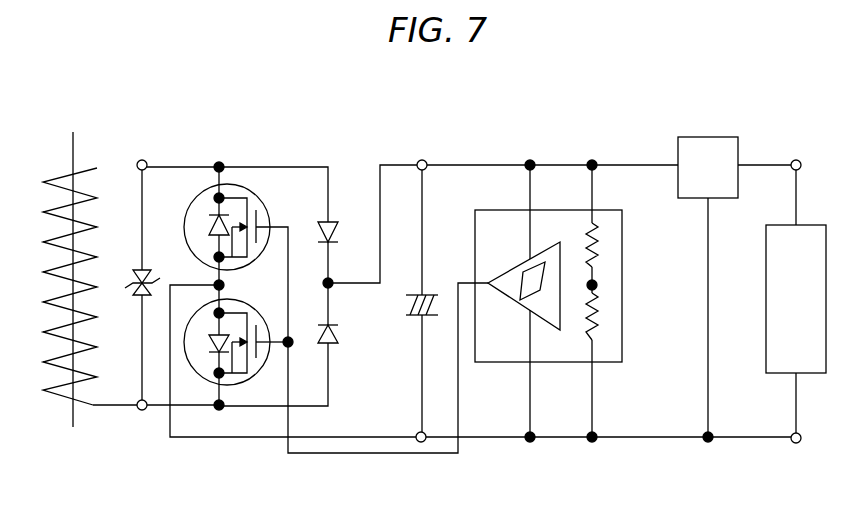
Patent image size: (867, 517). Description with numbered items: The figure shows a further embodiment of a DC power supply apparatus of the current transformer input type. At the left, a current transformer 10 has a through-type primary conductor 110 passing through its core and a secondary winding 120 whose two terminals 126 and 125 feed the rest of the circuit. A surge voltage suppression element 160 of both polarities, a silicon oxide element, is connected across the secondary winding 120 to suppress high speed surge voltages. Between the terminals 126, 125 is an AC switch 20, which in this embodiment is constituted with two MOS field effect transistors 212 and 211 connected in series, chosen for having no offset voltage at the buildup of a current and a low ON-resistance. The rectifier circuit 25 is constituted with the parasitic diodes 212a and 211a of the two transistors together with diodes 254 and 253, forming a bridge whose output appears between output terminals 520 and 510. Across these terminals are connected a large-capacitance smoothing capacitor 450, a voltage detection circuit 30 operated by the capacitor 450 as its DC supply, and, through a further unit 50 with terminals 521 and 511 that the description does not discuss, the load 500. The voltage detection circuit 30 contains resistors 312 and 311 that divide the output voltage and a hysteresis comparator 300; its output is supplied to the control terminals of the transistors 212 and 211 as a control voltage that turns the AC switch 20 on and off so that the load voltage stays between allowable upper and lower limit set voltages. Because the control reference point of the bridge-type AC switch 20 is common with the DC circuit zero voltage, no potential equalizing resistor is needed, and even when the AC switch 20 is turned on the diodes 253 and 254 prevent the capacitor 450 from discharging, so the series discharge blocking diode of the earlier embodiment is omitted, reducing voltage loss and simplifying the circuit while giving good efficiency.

The current transformer 10 is at (113, 154).
The through-type primary conductor 110 is at (73, 148).
The secondary winding 120 is at (98, 226).
The terminal of the secondary winding 126 is at (142, 160).
The terminal of the secondary winding 125 is at (140, 410).
The surge voltage suppression element 160 is at (147, 268).
The AC switch 20 is at (239, 154).
The MOS field effect transistor 212 is at (230, 225).
The parasitic diode 212a is at (211, 216).
The MOS field effect transistor 211 is at (224, 378).
The parasitic diode 211a is at (212, 356).
The rectifier circuit 25 is at (306, 154).
The diode 254 is at (334, 220).
The diode 253 is at (336, 333).
The output terminal 520 is at (424, 159).
The output terminal 510 is at (419, 443).
The capacitor 450 is at (428, 290).
The voltage detection circuit 30 is at (518, 210).
The hysteresis comparator 300 is at (516, 266).
The resistor 312 is at (599, 250).
The resistor 311 is at (599, 322).
The switch / relay unit 50 is at (709, 137).
The load terminal 521 is at (798, 159).
The load 500 is at (806, 225).
The load return terminal 511 is at (794, 443).